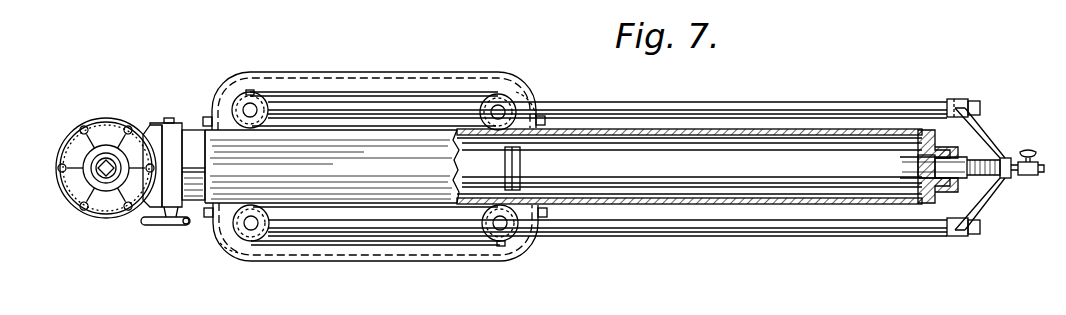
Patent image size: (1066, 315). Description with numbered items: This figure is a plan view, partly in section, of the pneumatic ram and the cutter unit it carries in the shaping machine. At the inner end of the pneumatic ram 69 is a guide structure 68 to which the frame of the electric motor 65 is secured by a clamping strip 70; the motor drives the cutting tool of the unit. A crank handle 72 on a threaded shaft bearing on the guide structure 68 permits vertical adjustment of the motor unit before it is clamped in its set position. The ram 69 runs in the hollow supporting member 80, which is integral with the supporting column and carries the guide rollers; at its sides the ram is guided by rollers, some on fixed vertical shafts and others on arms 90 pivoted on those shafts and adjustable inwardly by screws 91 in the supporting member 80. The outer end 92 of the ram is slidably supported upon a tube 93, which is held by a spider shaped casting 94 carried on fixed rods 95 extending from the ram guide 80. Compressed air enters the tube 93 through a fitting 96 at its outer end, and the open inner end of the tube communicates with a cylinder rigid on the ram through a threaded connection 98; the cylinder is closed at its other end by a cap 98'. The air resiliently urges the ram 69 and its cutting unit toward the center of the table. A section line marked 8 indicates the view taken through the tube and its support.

The electric motor 65 is at (72, 188).
The clamping strip 70 is at (158, 123).
The guide structure 68 is at (186, 135).
The crank handle 72 is at (182, 227).
The hollow supporting member 80 is at (425, 263).
The arm 90 is at (350, 95).
The screw 91 is at (252, 90).
The fixed rod 95 is at (763, 103).
The pneumatic ram 69 is at (758, 228).
The outer end of the ram 92 is at (930, 130).
The tube 93 is at (958, 184).
The spider shaped casting 94 is at (982, 135).
The fitting 96 is at (1004, 178).
The threaded connection 98 is at (950, 209).
The cap 98' is at (692, 166).
The section line 8 is at (486, 157).